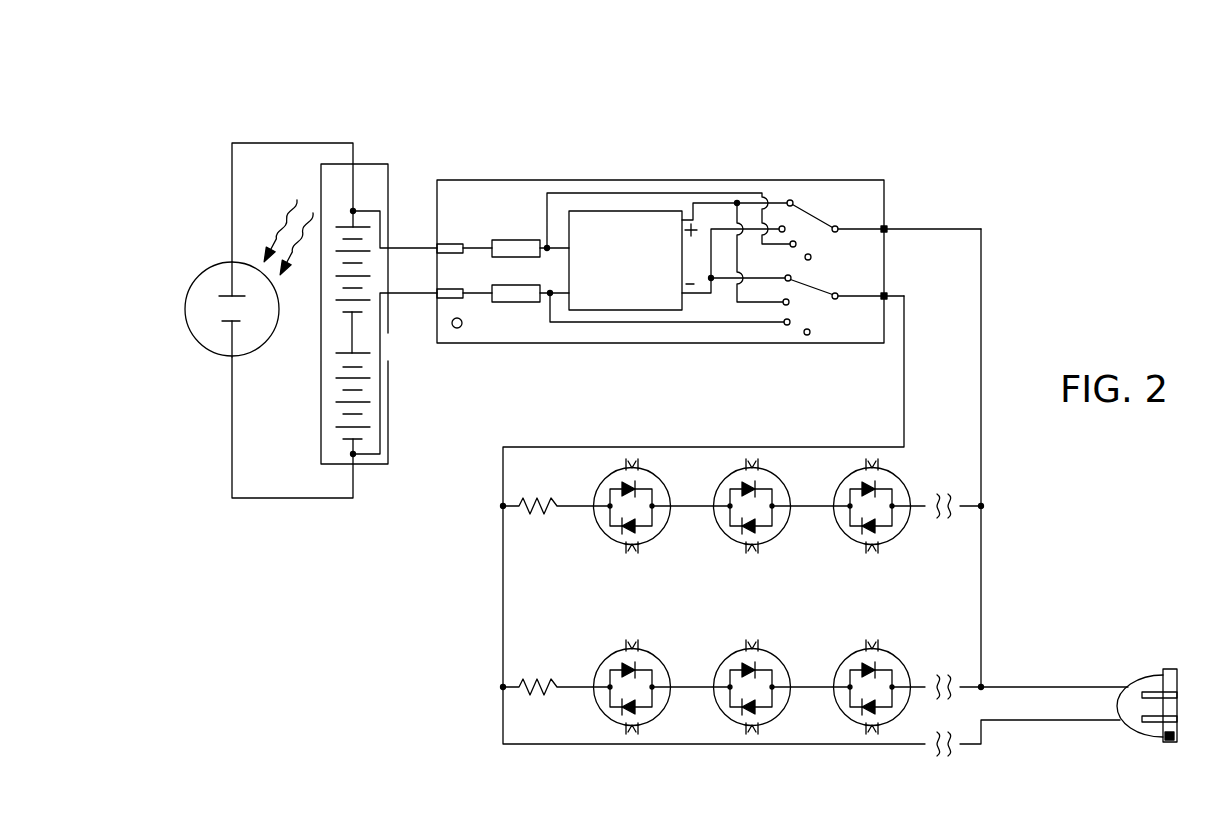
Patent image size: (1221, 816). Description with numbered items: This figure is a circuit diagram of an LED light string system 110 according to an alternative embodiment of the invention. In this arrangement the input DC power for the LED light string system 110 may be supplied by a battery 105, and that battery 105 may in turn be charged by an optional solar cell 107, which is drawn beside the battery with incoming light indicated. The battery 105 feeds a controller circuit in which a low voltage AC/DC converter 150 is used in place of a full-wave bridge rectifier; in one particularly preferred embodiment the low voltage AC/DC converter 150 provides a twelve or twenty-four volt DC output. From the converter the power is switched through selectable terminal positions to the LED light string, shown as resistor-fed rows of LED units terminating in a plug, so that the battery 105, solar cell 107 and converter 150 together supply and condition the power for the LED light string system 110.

The battery 105 is at (363, 163).
The solar cell 107 is at (217, 278).
The LED light string system 110 is at (480, 27).
The low voltage AC/DC converter 150 is at (645, 232).